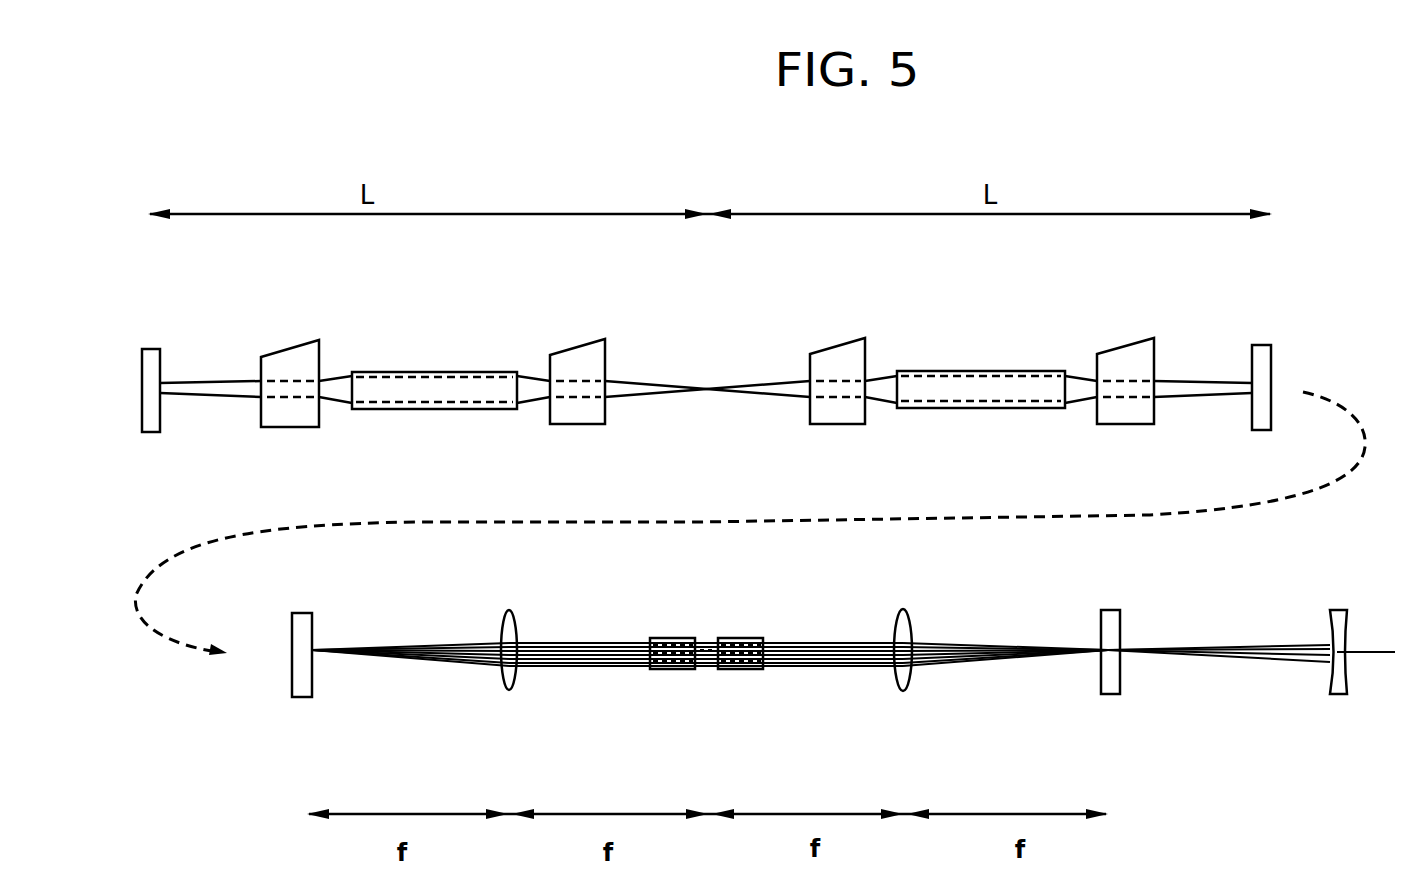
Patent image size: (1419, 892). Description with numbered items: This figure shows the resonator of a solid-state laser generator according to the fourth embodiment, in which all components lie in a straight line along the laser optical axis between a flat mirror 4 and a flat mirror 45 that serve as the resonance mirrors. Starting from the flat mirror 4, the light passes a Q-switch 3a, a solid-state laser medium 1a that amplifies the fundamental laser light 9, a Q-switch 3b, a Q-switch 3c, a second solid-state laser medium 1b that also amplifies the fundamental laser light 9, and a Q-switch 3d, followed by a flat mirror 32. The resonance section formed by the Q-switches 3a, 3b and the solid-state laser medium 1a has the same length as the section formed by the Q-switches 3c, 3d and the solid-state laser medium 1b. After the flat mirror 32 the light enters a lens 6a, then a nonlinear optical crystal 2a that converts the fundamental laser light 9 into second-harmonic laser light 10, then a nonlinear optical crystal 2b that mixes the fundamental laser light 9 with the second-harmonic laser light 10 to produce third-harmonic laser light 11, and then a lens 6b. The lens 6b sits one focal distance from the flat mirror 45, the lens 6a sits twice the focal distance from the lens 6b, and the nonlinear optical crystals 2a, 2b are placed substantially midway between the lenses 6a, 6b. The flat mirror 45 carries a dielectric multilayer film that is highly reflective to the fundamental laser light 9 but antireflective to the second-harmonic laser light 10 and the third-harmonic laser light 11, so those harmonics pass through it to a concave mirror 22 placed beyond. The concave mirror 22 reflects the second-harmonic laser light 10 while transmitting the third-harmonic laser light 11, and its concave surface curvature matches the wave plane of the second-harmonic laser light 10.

The flat mirror 4 is at (157, 432).
The Q-switch 3a is at (291, 341).
The Q-switch 3b is at (583, 340).
The Q-switch 3c is at (841, 346).
The Q-switch 3d is at (1126, 345).
The solid-state laser medium 1a is at (428, 410).
The solid-state laser medium 1b is at (993, 410).
The fundamental laser light 9 is at (707, 398).
The flat mirror 32 is at (1257, 345).
The lens 6a is at (509, 690).
The lens 6b is at (903, 691).
The nonlinear optical crystal 2a is at (673, 669).
The nonlinear optical crystal 2b is at (743, 669).
The flat mirror 45 is at (1112, 694).
The second-harmonic laser light 10 is at (1310, 663).
The concave mirror 22 is at (1340, 694).
The third-harmonic laser light 11 is at (1363, 646).